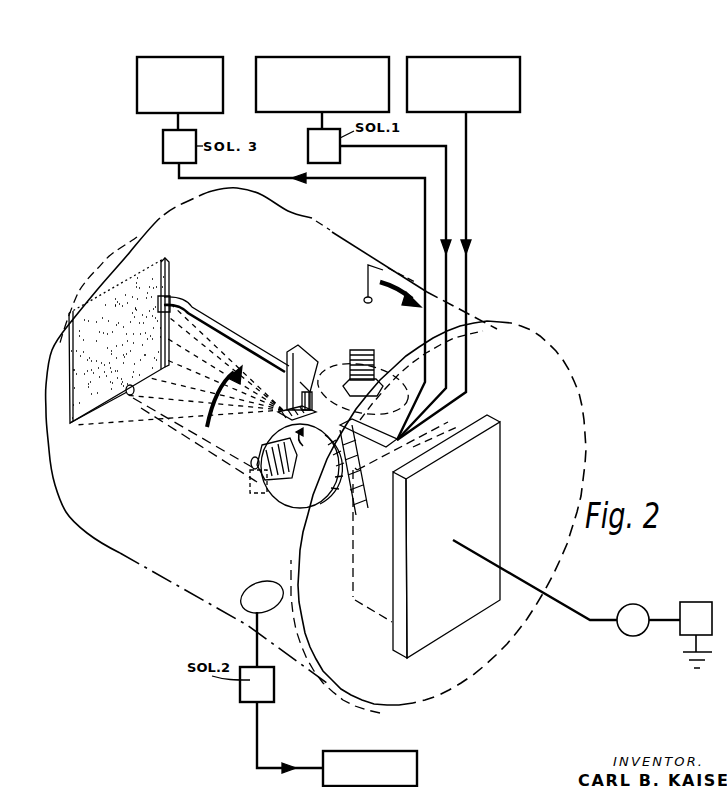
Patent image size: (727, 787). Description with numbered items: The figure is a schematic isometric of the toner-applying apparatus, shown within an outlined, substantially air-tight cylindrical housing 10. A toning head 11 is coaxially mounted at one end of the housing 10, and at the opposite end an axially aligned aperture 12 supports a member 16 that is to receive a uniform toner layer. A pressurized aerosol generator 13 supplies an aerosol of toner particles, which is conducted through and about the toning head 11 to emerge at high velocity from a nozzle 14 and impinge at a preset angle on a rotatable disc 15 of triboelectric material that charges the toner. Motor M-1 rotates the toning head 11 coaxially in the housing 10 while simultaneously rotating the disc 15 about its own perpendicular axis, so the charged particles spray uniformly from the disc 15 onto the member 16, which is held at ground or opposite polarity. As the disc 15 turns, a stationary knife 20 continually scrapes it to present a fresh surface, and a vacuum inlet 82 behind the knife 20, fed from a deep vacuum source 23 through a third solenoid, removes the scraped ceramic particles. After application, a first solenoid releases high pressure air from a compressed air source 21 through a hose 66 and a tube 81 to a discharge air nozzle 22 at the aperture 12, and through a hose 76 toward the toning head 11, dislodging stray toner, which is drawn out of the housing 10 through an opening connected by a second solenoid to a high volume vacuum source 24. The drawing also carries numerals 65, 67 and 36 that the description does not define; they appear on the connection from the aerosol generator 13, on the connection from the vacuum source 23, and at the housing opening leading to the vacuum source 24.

The housing 10 is at (138, 210).
The toning head 11 is at (402, 356).
The aperture 12 is at (164, 270).
The pressurized aerosol generator 13 is at (445, 56).
The nozzle 14 is at (290, 412).
The disc 15 is at (298, 487).
The member 16 is at (87, 327).
The stationary knife 20 is at (300, 360).
The compressed air source 21 is at (319, 56).
The discharge air nozzle 22 is at (170, 297).
The deep vacuum source 23 is at (177, 56).
The high volume vacuum source 24 is at (368, 751).
The port 36 is at (287, 588).
The aerosol line 65 is at (467, 130).
The hose 66 is at (445, 146).
The vacuum line 67 is at (419, 178).
The hose 76 is at (410, 284).
The tube 81 is at (230, 323).
The vacuum inlet 82 is at (293, 396).
The motor M-1 is at (628, 603).